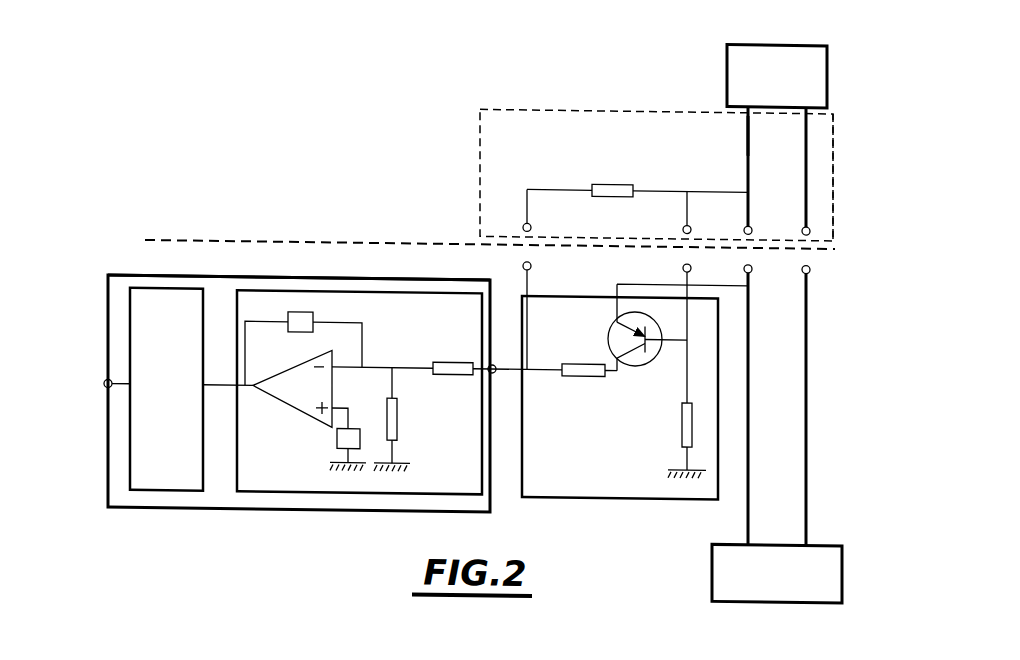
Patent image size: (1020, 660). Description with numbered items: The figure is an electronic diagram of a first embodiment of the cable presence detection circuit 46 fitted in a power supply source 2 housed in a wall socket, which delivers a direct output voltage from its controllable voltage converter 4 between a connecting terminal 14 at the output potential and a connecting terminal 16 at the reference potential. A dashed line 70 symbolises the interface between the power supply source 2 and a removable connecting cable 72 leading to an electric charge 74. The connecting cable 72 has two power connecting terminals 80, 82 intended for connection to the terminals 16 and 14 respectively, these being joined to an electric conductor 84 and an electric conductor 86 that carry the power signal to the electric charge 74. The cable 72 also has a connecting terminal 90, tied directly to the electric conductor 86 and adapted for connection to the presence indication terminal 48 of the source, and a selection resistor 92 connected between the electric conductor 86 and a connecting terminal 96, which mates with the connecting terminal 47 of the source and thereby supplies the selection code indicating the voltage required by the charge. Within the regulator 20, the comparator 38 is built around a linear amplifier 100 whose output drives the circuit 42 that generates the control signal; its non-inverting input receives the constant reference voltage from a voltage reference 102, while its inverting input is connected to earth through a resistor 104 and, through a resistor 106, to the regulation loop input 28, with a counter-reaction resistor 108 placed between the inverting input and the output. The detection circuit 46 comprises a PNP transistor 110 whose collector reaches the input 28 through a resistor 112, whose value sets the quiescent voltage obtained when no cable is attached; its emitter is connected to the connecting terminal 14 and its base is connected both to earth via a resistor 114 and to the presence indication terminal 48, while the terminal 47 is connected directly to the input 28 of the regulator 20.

The power supply source 2 is at (98, 255).
The voltage converter 4 is at (777, 573).
The connecting terminal 14 is at (750, 268).
The connecting terminal 16 is at (809, 266).
The regulator 20 is at (183, 511).
The regulation loop input 28 is at (494, 372).
The comparator 38 is at (283, 494).
The circuit for generating the control signal 42 is at (182, 390).
The cable presence detection circuit 46 is at (637, 497).
The connecting terminal 47 is at (523, 263).
The connecting terminal 48 is at (683, 263).
The line 70 is at (218, 240).
The connecting cable 72 is at (477, 106).
The electric charge 74 is at (777, 76).
The power connecting terminal 80 is at (810, 224).
The power connecting terminal 82 is at (752, 223).
The electric conductor 84 is at (834, 118).
The electric conductor 86 is at (746, 124).
The connecting terminal 90 is at (691, 224).
The resistor 92 is at (612, 193).
The connecting terminal 96 is at (531, 224).
The linear amplifier 100 is at (290, 378).
The voltage reference 102 is at (337, 436).
The resistor 104 is at (400, 418).
The resistor 106 is at (455, 375).
The counter-reaction resistor 108 is at (314, 320).
The PNP transistor 110 is at (614, 318).
The resistor 112 is at (585, 375).
The resistor 114 is at (680, 422).